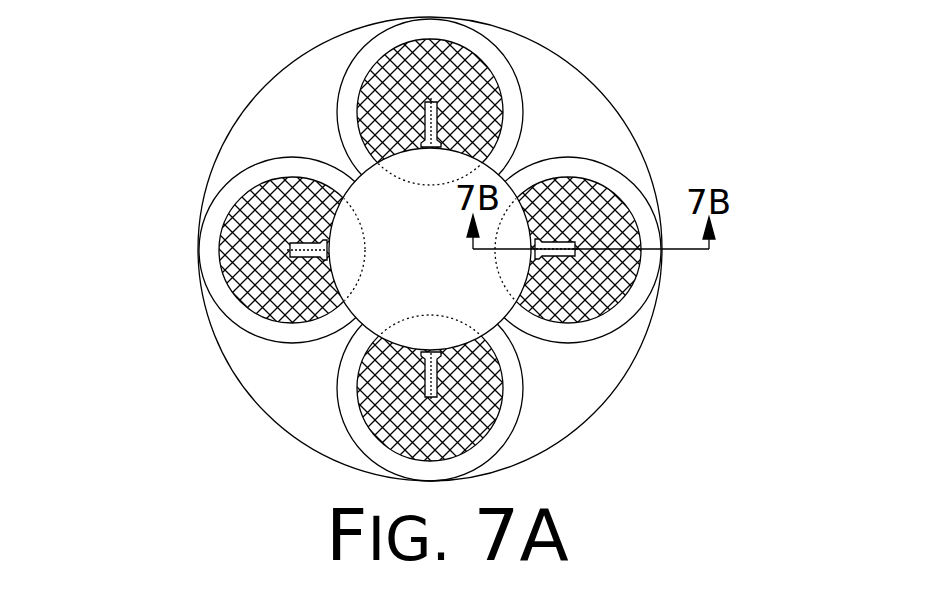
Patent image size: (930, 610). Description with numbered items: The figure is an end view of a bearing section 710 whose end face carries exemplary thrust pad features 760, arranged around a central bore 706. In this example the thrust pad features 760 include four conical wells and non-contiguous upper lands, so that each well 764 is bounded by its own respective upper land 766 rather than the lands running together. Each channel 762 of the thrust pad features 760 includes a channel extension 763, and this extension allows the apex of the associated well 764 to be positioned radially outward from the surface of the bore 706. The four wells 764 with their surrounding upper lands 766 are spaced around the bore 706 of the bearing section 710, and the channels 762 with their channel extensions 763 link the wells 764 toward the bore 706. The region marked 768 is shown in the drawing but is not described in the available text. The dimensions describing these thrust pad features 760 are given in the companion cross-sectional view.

The thrust pad features 760 is at (417, 246).
The bearing section 710 is at (258, 93).
The bore 706 is at (352, 320).
The channel 762 is at (557, 240).
The channel extension 763 is at (573, 238).
The well 764 is at (642, 197).
The upper land 766 is at (613, 187).
The housing body 768 is at (439, 249).